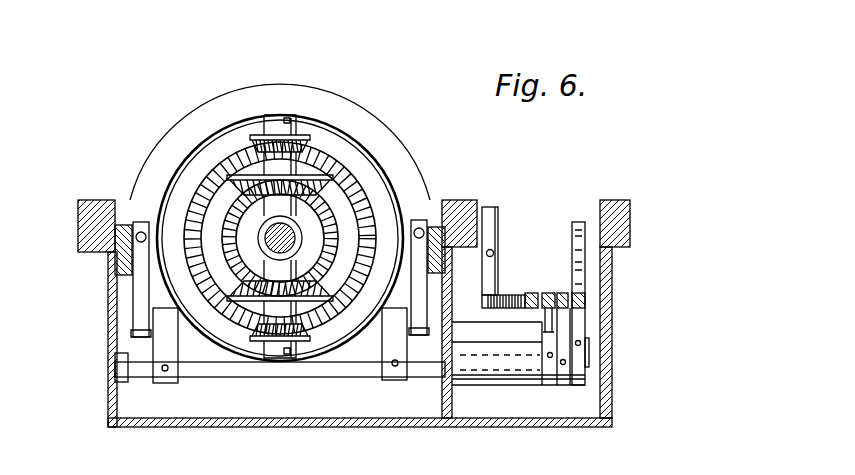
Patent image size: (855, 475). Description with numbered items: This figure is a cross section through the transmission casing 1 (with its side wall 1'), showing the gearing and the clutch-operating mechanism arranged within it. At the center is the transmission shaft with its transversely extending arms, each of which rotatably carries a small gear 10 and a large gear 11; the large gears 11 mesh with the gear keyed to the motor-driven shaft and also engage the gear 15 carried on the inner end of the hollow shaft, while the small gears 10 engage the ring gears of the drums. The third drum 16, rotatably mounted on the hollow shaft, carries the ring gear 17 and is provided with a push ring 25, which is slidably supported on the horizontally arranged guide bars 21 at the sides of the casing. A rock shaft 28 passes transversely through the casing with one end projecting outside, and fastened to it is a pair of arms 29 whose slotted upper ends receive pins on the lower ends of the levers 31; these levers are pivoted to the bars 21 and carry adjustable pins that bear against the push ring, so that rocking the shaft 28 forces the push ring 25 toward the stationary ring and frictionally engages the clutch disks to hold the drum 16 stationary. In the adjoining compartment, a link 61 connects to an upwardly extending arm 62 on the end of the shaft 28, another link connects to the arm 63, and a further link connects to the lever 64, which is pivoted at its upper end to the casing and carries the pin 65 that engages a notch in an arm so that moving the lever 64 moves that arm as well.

The casing 1 is at (354, 331).
The casing side wall 1' is at (623, 332).
The small gear 10 is at (298, 128).
The large gear 11 is at (343, 157).
The gear 15 is at (420, 168).
The third drum 16 is at (233, 133).
The ring gear 17 is at (217, 165).
The guide bars 21 is at (443, 190).
The push ring 25 is at (292, 95).
The rock shaft 28 is at (295, 367).
The arms 29 is at (165, 382).
The levers 31 is at (137, 288).
The link 61 is at (523, 292).
The upwardly extending arms 62 is at (567, 388).
The arm 63 is at (577, 325).
The lever 64 is at (492, 233).
The pin 65 is at (494, 253).